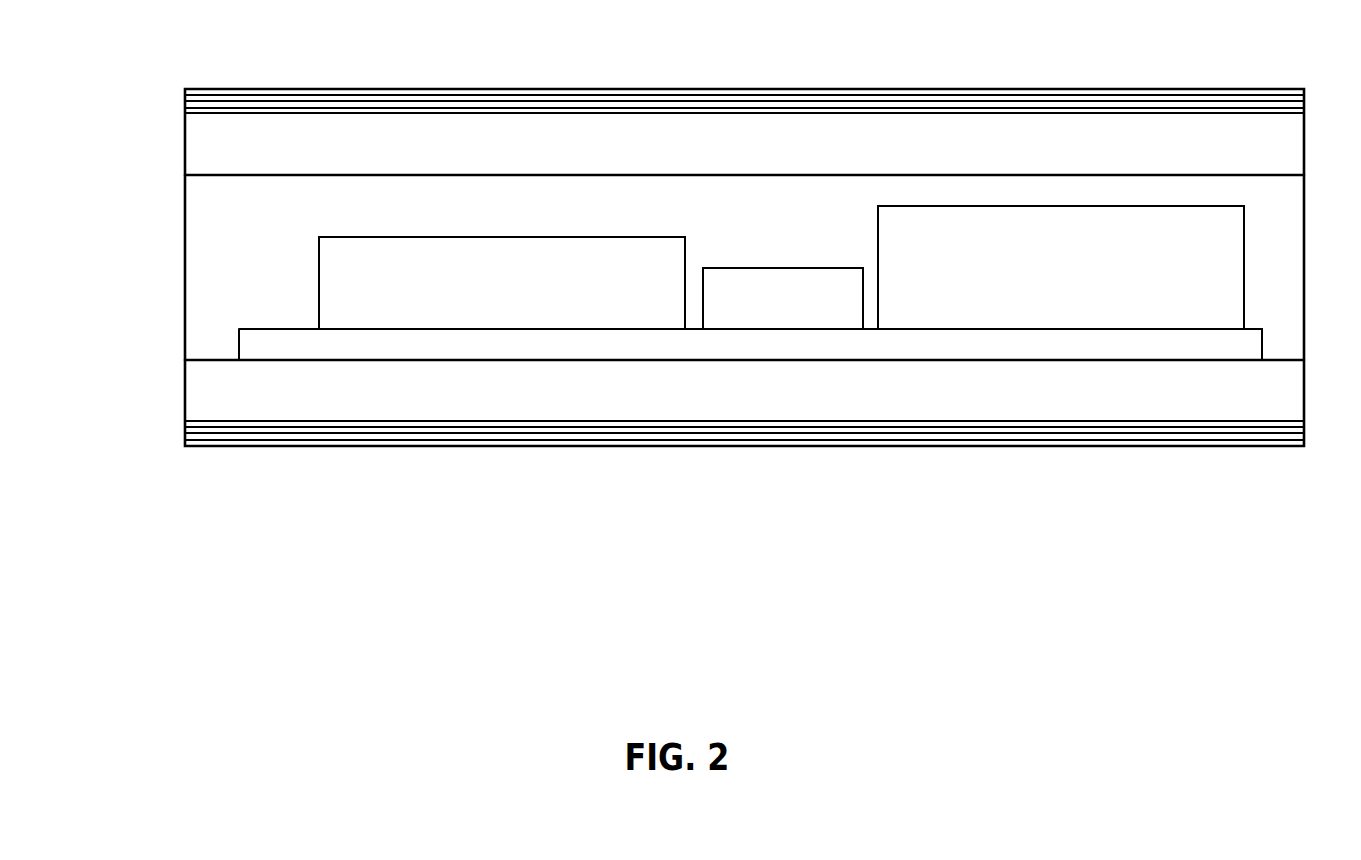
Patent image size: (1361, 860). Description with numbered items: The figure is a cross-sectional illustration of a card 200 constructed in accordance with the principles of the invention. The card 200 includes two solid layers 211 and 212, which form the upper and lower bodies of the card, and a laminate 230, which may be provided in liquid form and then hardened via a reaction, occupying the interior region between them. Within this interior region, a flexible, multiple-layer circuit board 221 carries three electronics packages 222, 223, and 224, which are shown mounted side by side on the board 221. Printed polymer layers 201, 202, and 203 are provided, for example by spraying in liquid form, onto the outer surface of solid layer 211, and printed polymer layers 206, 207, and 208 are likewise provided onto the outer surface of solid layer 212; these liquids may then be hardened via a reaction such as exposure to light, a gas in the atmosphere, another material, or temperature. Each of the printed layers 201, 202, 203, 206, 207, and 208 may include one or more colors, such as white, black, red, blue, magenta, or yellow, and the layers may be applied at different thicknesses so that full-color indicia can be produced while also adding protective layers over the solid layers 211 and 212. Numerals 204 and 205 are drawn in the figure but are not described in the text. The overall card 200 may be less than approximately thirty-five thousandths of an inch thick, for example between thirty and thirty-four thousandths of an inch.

The card 200 is at (1322, 137).
The printed polymer layer 201 is at (215, 89).
The printed polymer layer 202 is at (185, 95).
The printed polymer layer 203 is at (185, 101).
The inner top layer 204 is at (322, 113).
The inner bottom layer 205 is at (214, 420).
The printed polymer layer 206 is at (185, 427).
The printed polymer layer 207 is at (185, 429).
The printed polymer layer 208 is at (183, 442).
The solid layer 211 is at (185, 158).
The solid layer 212 is at (185, 360).
The circuit board 221 is at (240, 343).
The electronics package 222 is at (319, 240).
The electronics package 223 is at (833, 267).
The electronics package 224 is at (878, 222).
The laminate 230 is at (719, 213).